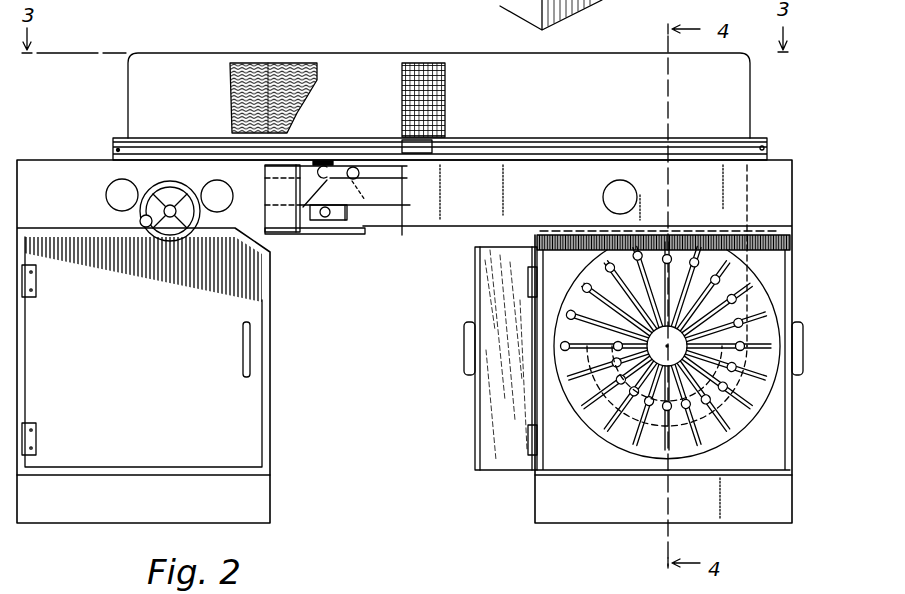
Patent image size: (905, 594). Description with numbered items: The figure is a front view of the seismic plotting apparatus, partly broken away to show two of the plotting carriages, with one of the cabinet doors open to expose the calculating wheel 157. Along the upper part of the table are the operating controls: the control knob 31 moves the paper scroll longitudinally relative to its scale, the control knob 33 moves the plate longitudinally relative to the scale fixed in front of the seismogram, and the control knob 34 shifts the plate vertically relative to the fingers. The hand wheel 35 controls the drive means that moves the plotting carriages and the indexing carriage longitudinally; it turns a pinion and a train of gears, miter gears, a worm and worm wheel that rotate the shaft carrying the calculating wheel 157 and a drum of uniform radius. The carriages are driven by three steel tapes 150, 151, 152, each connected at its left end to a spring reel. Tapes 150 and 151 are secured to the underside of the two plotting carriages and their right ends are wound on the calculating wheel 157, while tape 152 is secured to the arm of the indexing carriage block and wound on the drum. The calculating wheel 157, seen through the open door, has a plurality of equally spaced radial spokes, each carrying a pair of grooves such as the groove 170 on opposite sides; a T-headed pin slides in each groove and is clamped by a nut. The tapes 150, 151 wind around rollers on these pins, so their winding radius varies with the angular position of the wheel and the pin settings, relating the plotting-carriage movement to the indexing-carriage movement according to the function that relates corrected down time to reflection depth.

The control knob 31 is at (604, 201).
The control knob 33 is at (116, 181).
The control knob 34 is at (212, 181).
The hand wheel 35 is at (165, 182).
The steel tape 150 is at (668, 390).
The steel tape 151 is at (692, 403).
The steel tape 152 is at (650, 387).
The calculating wheel 157 is at (602, 397).
The groove 170 is at (587, 403).